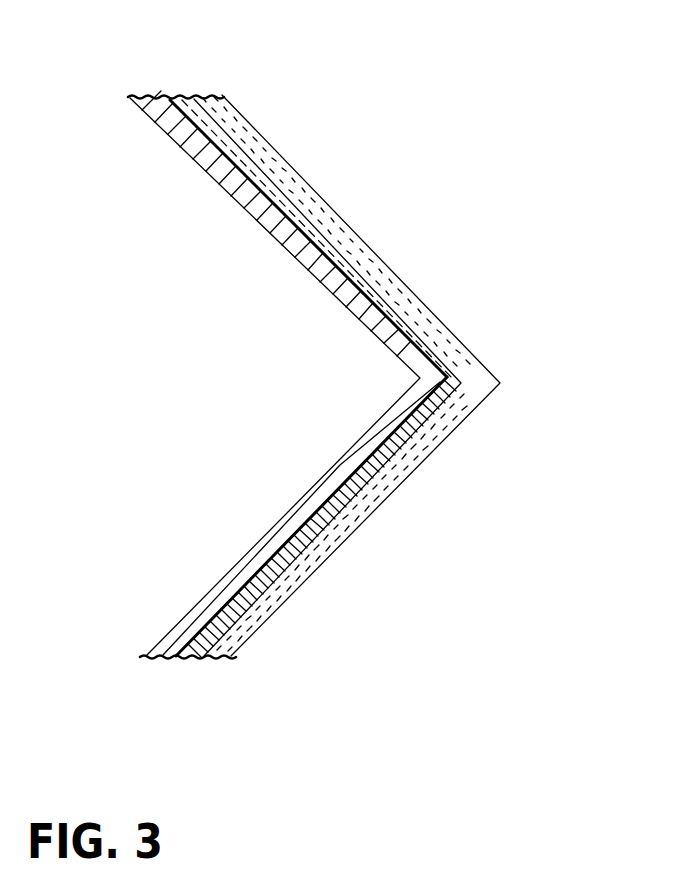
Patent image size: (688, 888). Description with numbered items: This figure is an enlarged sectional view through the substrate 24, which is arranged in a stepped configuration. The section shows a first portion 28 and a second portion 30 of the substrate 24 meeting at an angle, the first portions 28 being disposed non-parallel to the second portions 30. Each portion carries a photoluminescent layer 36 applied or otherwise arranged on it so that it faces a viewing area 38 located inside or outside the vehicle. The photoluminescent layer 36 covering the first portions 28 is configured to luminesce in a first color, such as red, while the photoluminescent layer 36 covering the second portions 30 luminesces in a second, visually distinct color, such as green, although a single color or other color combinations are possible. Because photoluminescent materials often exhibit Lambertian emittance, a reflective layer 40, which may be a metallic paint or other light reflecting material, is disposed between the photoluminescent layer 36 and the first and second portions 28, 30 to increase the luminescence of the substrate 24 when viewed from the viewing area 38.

The substrate 24 is at (314, 339).
The first portions 28 is at (268, 218).
The second portions 30 is at (289, 526).
The photoluminescent layer 36 is at (403, 294).
The viewing area 38 is at (625, 399).
The reflective layer 40 is at (322, 238).